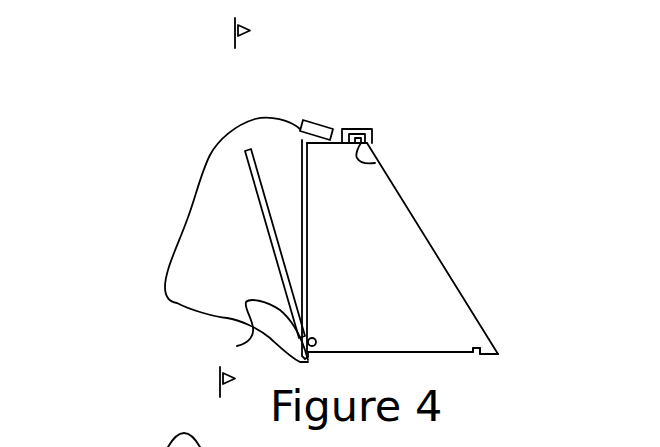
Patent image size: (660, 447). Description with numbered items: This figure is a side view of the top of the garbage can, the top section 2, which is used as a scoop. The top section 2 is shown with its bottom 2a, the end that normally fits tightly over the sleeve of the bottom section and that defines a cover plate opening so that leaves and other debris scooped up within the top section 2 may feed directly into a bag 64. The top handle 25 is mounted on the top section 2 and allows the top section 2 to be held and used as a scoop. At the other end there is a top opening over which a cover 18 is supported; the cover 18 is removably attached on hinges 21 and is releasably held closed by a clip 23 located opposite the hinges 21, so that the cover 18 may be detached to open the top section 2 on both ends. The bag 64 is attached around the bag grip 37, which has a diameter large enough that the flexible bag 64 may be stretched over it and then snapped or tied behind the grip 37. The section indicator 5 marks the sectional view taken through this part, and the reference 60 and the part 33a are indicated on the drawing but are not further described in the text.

The top section 2 is at (430, 307).
The bottom of top section 2a is at (450, 253).
The section line 5- 5 is at (244, 210).
The cover 18 is at (277, 238).
The hinges 21 is at (237, 346).
The clip 23 is at (326, 120).
The top handle 25 is at (372, 141).
The corner piece 33a is at (375, 163).
The bag grip 37 is at (307, 183).
The motion arrow 60 is at (293, 170).
The bag 64 is at (203, 163).